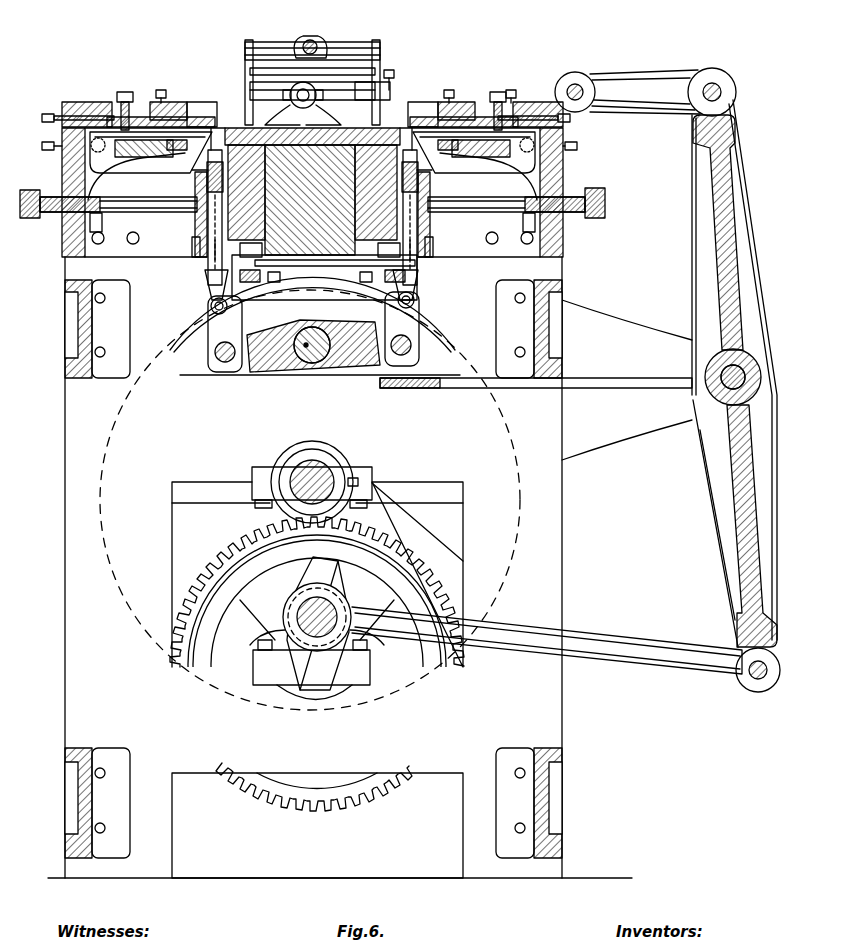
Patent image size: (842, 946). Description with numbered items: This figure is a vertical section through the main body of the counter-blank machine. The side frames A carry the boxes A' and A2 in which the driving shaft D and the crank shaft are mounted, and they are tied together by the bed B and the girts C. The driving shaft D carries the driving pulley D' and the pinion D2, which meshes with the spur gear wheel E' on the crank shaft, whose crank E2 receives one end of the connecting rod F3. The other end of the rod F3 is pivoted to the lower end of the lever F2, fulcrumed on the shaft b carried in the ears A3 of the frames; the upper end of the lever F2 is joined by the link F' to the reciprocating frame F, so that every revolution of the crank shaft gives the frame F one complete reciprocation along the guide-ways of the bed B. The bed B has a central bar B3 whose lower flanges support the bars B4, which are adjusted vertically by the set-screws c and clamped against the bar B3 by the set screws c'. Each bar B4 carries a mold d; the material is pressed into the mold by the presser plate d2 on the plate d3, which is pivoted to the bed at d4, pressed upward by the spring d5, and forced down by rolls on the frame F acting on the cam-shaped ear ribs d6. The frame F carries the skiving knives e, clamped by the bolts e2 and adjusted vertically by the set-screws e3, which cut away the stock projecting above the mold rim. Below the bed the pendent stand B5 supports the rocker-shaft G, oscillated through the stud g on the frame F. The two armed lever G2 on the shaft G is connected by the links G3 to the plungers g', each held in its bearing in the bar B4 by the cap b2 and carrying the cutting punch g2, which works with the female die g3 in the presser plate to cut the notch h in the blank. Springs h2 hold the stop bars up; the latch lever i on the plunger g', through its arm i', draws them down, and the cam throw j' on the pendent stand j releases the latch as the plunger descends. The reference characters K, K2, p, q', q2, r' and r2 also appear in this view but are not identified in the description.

The side frames A is at (317, 500).
The boxes A' is at (315, 477).
The boxes A2 is at (326, 702).
The ears A3 is at (536, 365).
The bed B is at (66, 240).
The central bar B3 is at (310, 200).
The bars B4 is at (312, 192).
The pendent stand B5 is at (312, 314).
The shaft b is at (758, 372).
The cap b2 is at (314, 235).
The girts C is at (313, 569).
The set-screws c is at (322, 295).
The set screws c' is at (315, 203).
The driving shaft D is at (309, 479).
The driving pulley D' is at (290, 574).
The pinion D2 is at (345, 516).
The mold d is at (312, 152).
The presser plate d2 is at (478, 84).
The plate d3 is at (150, 158).
The pivot d4 is at (90, 134).
The spring d5 is at (312, 176).
The ear ribs d6 is at (560, 135).
The spur gear wheel E' is at (317, 664).
The crank E2 is at (298, 610).
The skiving knife e is at (416, 100).
The bolts e2 is at (315, 101).
The set-screws e3 is at (338, 87).
The reciprocating frame F is at (300, 87).
The link F' is at (645, 88).
The lever F2 is at (734, 373).
The connecting rod F3 is at (566, 649).
The rocker-shaft G is at (314, 350).
The two armed lever G2 is at (280, 368).
The links G3 is at (212, 352).
The stud g is at (312, 217).
The plunger g' is at (318, 246).
The cutting punch g2 is at (317, 169).
The female die g3 is at (211, 128).
The notch h is at (314, 169).
The springs h2 is at (324, 277).
The latch lever i is at (317, 283).
The arm i' is at (308, 262).
The pendent stand j is at (318, 239).
The cam throw j' is at (306, 297).
The knob K is at (311, 44).
The roller bar K2 is at (312, 61).
The post p is at (248, 80).
The screw q' is at (310, 73).
The bar q2 is at (362, 87).
The ring r' is at (303, 95).
The hook r2 is at (312, 115).